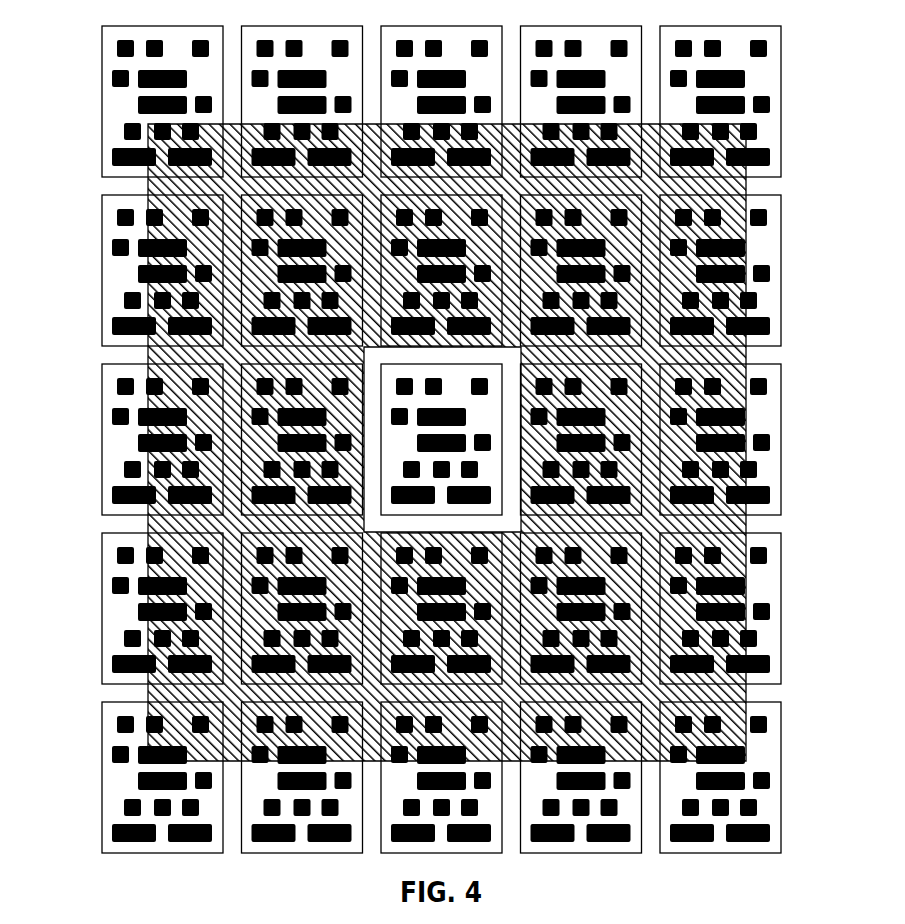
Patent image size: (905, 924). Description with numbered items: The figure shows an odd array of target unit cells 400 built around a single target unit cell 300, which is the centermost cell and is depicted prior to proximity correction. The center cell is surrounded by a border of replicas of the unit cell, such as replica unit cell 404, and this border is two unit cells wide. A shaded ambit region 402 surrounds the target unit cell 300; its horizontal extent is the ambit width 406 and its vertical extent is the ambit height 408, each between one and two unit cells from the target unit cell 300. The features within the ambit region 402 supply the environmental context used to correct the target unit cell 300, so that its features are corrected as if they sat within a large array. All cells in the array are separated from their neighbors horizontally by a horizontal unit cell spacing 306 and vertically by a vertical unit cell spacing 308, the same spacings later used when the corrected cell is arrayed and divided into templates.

The odd array of target unit cells 400 is at (35, 54).
The ambit region 402 is at (693, 185).
The replica unit cell 404 is at (755, 80).
The target unit cell 300 is at (612, 396).
The ambit width 406 is at (521, 855).
The ambit height 408 is at (790, 533).
The horizontal unit cell spacing 306 is at (222, 854).
The vertical unit cell spacing 308 is at (100, 683).